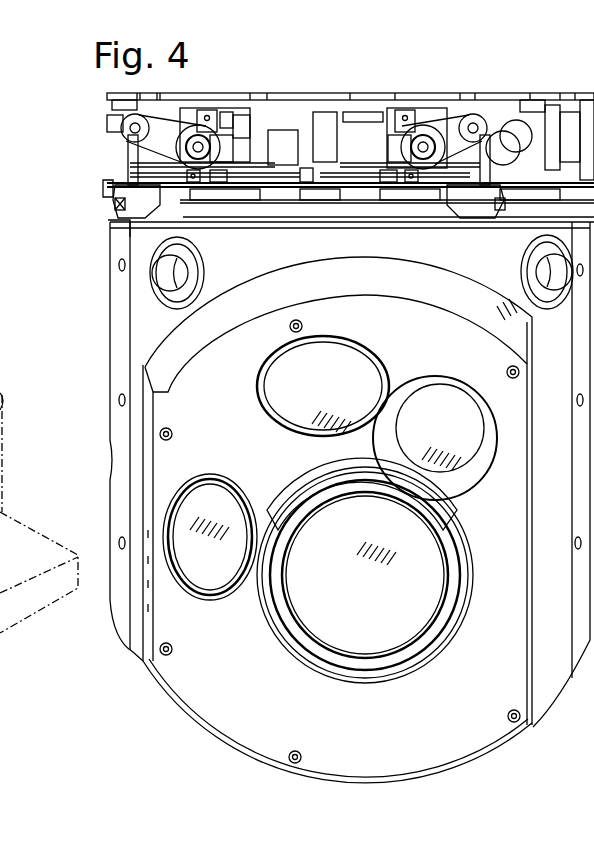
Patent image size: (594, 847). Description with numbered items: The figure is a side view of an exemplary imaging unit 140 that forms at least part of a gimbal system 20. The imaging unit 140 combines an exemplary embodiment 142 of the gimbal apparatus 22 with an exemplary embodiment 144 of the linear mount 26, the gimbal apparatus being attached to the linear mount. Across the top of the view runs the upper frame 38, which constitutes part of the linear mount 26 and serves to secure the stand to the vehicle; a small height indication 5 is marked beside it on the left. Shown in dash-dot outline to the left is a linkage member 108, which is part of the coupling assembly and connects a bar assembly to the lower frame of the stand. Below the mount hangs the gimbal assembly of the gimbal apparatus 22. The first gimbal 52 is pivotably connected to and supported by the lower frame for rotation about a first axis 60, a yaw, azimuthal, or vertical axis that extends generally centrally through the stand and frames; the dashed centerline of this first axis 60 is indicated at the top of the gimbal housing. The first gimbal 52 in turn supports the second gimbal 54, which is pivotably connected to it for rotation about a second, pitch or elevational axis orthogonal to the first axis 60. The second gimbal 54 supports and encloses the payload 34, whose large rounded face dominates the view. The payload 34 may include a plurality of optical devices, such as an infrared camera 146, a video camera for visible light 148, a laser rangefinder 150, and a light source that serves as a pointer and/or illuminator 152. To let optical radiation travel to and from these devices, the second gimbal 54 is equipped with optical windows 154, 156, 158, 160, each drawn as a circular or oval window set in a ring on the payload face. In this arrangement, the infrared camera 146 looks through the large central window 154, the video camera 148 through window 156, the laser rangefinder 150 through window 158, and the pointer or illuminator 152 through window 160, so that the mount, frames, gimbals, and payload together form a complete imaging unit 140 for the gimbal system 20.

The gimbal system 20 is at (366, 34).
The imaging unit 140 is at (396, 56).
The upper frame 38 is at (393, 93).
The linear mount 26 is at (92, 82).
The exemplary embodiment of linear mount 144 is at (92, 104).
The height dimension 5 is at (108, 155).
The gimbal apparatus 22 is at (95, 198).
The exemplary embodiment of gimbal apparatus 142 is at (95, 229).
The first gimbal 52 is at (112, 283).
The second gimbal 54 is at (365, 790).
The first axis 60 is at (364, 233).
The payload 34 is at (243, 447).
The laser rangefinder 150 is at (345, 360).
The optical window 158 is at (331, 393).
The video camera 148 is at (437, 400).
The optical window 156 is at (476, 431).
The light source 152 is at (208, 580).
The optical window 160 is at (234, 564).
The infrared camera 146 is at (350, 630).
The optical window 154 is at (362, 598).
The linkage member 108 is at (2, 490).